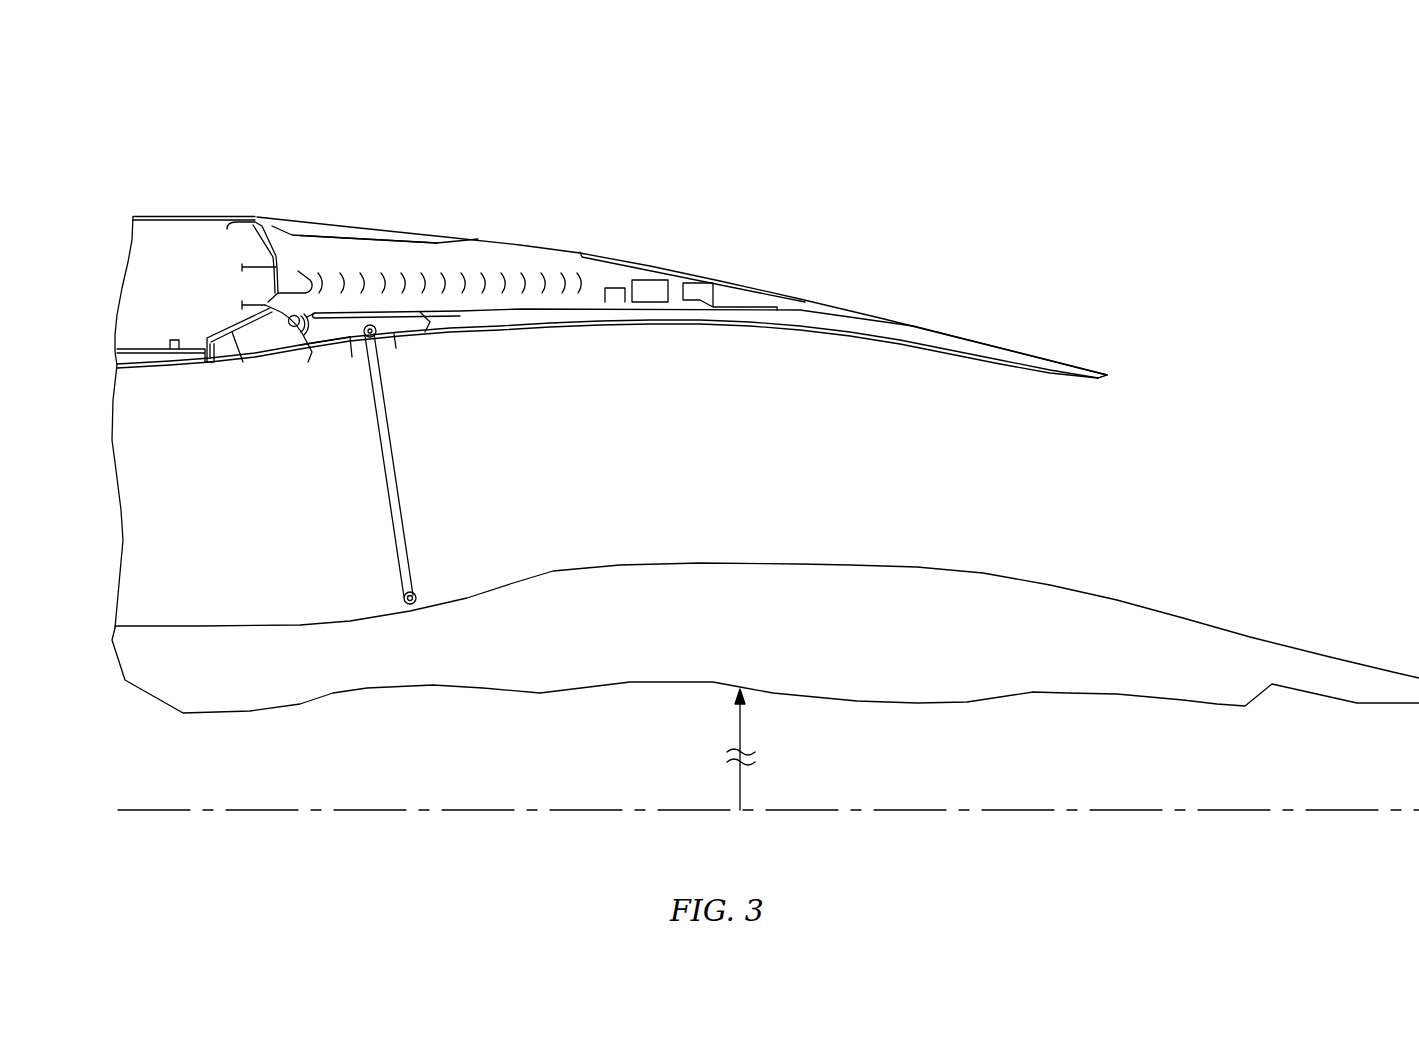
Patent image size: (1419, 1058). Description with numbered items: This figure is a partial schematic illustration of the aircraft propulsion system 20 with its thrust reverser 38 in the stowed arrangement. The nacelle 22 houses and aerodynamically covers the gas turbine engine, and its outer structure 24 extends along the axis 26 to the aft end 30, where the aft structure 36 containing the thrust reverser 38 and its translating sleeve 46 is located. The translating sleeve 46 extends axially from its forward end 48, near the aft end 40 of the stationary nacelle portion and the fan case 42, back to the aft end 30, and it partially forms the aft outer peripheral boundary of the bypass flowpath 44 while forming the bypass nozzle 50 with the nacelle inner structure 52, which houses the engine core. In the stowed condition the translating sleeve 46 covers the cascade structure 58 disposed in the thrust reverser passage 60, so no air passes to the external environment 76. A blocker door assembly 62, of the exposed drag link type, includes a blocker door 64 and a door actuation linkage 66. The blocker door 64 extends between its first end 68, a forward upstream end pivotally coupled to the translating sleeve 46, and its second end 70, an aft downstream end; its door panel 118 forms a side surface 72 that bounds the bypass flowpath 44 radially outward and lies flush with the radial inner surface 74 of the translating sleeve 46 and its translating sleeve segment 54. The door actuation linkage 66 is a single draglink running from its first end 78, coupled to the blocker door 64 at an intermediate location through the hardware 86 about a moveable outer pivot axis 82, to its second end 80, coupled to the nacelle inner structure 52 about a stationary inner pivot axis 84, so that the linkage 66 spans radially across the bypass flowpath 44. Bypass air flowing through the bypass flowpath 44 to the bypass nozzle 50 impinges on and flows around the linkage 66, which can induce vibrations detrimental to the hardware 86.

The aircraft propulsion system 20 is at (186, 106).
The nacelle 22 is at (165, 160).
The outer structure 24 is at (154, 186).
The axis 26 is at (322, 809).
The aft end 30 is at (1113, 372).
The aft structure 36 is at (595, 216).
The thrust reverser 38 is at (349, 164).
The aft end of stationary portion 40 is at (253, 212).
The fan case 42 is at (114, 352).
The bypass flowpath 44 is at (224, 525).
The translating sleeve 46 is at (692, 255).
The translating sleeve segment 54 is at (660, 257).
The forward end of translating sleeve 48 is at (262, 217).
The bypass nozzle 50 is at (1118, 467).
The inner structure 52 is at (553, 566).
The cascade structure 58 is at (503, 266).
The thrust reverser passage 60 is at (440, 248).
The blocker door assembly 62 is at (432, 465).
The blocker door 64 is at (311, 378).
The door actuation linkage 66 is at (410, 497).
The first end of blocker door 68 is at (222, 368).
The second end of blocker door 70 is at (432, 325).
The side surface 72 is at (252, 379).
The door panel 118 is at (283, 365).
The radial inner surface 74 is at (512, 333).
The environment 76 is at (396, 50).
The first end of door actuation linkage 78 is at (371, 324).
The second end of door actuation linkage 80 is at (408, 608).
The outer pivot axis 82 is at (352, 360).
The inner pivot axis 84 is at (418, 600).
The hardware 86 is at (398, 320).